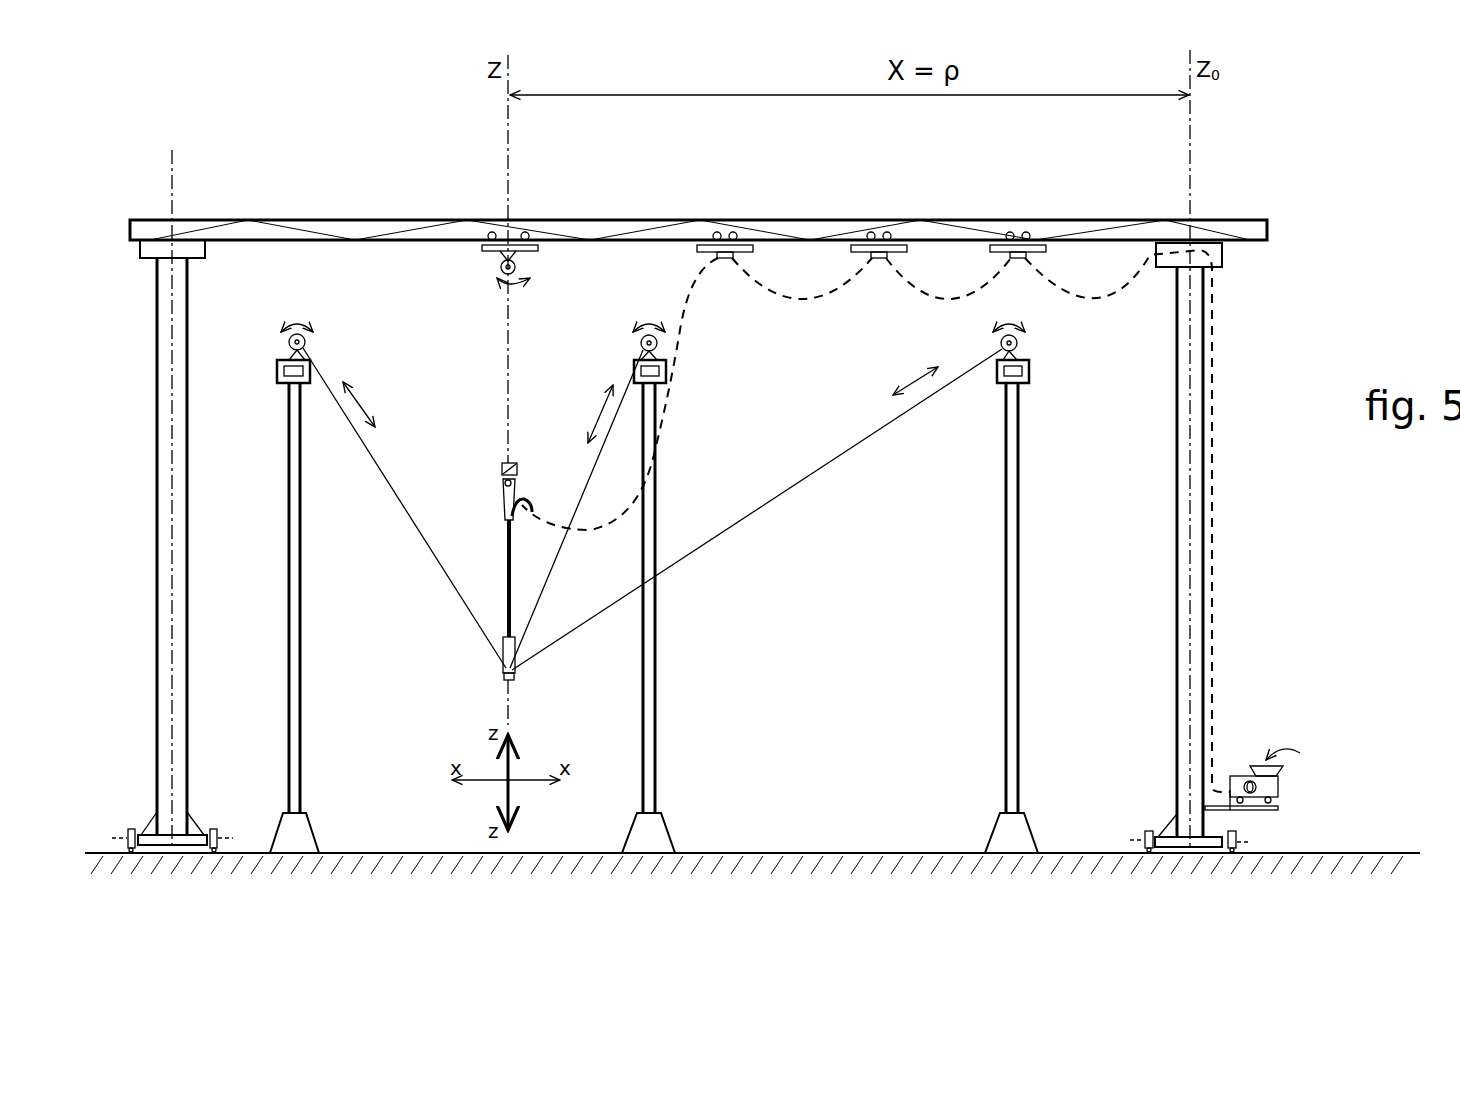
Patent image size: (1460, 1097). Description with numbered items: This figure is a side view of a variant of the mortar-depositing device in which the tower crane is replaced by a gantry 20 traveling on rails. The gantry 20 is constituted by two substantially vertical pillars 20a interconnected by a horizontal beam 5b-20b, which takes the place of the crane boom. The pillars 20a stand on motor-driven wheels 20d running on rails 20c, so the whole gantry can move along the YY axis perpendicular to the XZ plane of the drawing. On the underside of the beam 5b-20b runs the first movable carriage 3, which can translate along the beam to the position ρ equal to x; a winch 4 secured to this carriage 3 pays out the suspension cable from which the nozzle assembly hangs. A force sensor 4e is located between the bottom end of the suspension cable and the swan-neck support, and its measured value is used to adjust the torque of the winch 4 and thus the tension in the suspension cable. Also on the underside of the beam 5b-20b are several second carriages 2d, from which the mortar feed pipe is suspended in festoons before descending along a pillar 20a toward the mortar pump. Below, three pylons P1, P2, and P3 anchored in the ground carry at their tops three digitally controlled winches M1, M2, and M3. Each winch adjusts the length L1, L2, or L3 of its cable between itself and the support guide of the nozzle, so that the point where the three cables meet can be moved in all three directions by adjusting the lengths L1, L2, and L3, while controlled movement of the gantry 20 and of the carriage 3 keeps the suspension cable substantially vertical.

The gantry 20 is at (745, 512).
The pillar 20a is at (157, 545).
The boom / horizontal beam 5b-20b is at (698, 206).
The rail 20c is at (1245, 850).
The motor-driven wheel 20d is at (1223, 823).
The second carriage 2d is at (865, 247).
The first movable carriage 3 is at (482, 248).
The winch 4 is at (520, 266).
The force sensor 4e is at (502, 468).
The first winch M1 is at (290, 345).
The second winch M2 is at (642, 345).
The third winch M3 is at (1018, 345).
The first pylon P1 is at (289, 742).
The second pylon P2 is at (643, 742).
The third pylon P3 is at (1006, 742).
The first cable length L1 is at (404, 508).
The second cable length L2 is at (576, 509).
The third cable length L3 is at (757, 509).